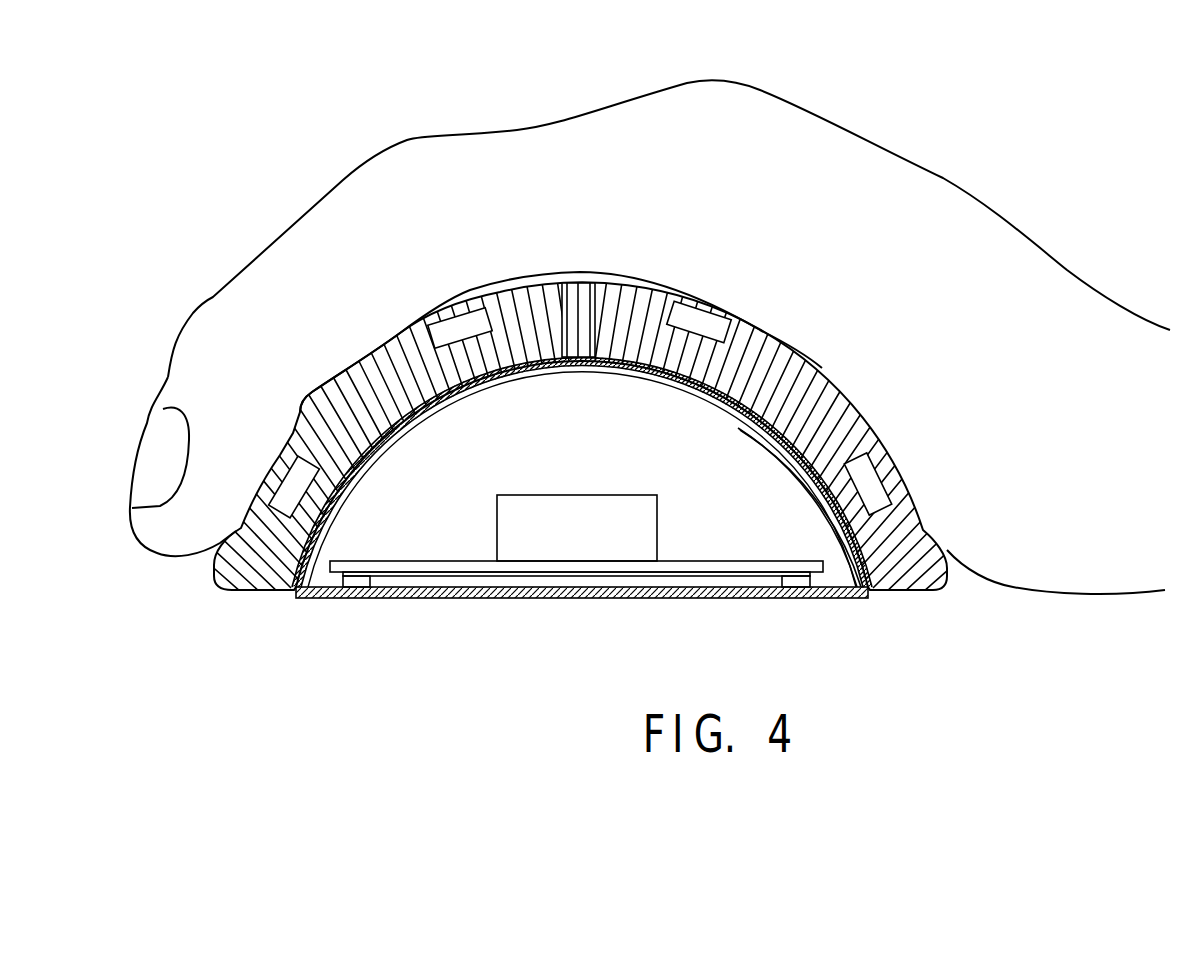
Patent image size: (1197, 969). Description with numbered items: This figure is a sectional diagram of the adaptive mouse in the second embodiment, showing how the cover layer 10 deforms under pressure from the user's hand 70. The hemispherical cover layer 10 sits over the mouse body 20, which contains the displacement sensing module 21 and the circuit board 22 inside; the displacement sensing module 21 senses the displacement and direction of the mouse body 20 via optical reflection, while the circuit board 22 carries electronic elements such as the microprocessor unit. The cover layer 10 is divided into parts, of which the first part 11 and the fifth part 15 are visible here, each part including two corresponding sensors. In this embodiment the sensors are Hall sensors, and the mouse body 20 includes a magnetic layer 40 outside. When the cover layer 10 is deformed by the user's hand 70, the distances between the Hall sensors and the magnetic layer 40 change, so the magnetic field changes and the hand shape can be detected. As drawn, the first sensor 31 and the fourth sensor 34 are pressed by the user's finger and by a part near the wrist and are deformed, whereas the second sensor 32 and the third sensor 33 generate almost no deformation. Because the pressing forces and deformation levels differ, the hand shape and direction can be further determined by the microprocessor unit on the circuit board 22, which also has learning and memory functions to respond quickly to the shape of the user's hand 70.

The cover layer 10 is at (552, 280).
The first part 11 is at (342, 373).
The fifth part 15 is at (835, 385).
The mouse body 20 is at (730, 606).
The displacement sensing module 21 is at (578, 495).
The circuit board 22 is at (482, 577).
The first sensor 31 is at (283, 520).
The second sensor 32 is at (452, 310).
The third sensor 33 is at (700, 310).
The fourth sensor 34 is at (885, 474).
The magnetic layer 40 is at (770, 428).
The user's hand 70 is at (1063, 297).